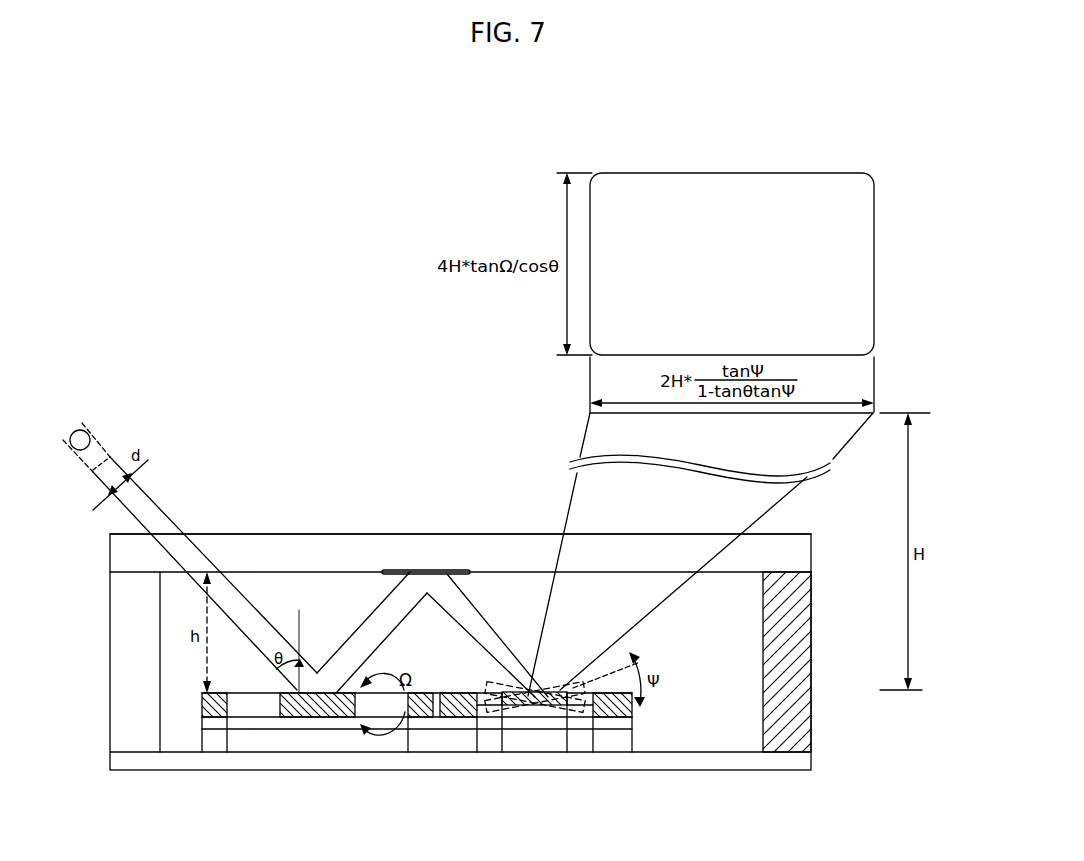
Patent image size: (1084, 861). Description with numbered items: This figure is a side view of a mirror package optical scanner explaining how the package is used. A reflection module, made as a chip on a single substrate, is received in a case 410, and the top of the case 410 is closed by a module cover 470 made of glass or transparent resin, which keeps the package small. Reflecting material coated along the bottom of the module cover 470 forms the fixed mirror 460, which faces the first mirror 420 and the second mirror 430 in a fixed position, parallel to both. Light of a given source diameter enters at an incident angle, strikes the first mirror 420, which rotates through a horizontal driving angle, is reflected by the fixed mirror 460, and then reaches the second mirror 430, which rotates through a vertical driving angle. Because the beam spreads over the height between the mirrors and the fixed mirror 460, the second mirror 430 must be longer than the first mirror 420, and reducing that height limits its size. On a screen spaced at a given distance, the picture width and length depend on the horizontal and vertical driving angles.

The case 410 is at (802, 663).
The first mirror 420 is at (315, 703).
The second mirror 430 is at (583, 697).
The fixed mirror 460 is at (424, 570).
The module cover 470 is at (798, 551).